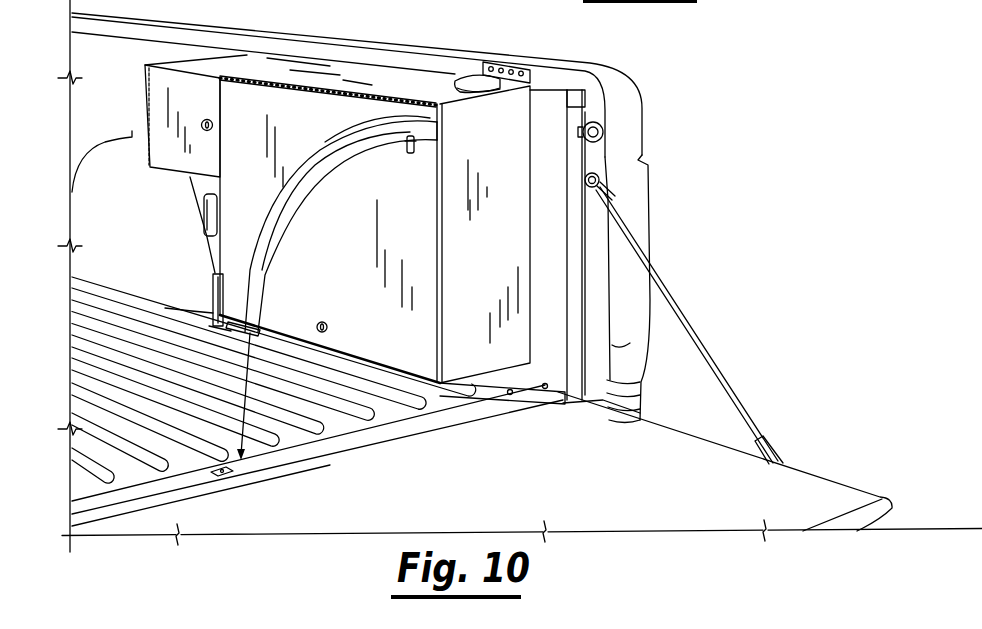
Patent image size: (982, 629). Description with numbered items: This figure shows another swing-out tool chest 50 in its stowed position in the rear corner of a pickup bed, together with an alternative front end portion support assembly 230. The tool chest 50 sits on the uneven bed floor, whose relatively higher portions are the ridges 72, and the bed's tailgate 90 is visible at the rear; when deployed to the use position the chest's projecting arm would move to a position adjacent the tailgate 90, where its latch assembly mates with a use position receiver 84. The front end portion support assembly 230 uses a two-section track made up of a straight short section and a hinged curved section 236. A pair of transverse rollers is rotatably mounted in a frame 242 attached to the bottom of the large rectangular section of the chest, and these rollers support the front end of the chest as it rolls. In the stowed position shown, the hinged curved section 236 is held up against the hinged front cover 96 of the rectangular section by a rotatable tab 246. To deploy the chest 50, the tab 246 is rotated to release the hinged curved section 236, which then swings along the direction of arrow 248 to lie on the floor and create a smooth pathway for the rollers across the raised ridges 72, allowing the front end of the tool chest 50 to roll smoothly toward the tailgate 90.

The swing-out tool chest 50 is at (341, 64).
The hinged front cover 96 is at (419, 238).
The hinged curved section 236 is at (331, 150).
The rotatable tab 246 is at (410, 157).
The arrow 248 is at (301, 214).
The frame 242 is at (308, 327).
The front end portion support assembly 230 is at (219, 344).
The ridges 72 is at (333, 437).
The use position receiver 84 is at (225, 480).
The tailgate 90 is at (841, 481).